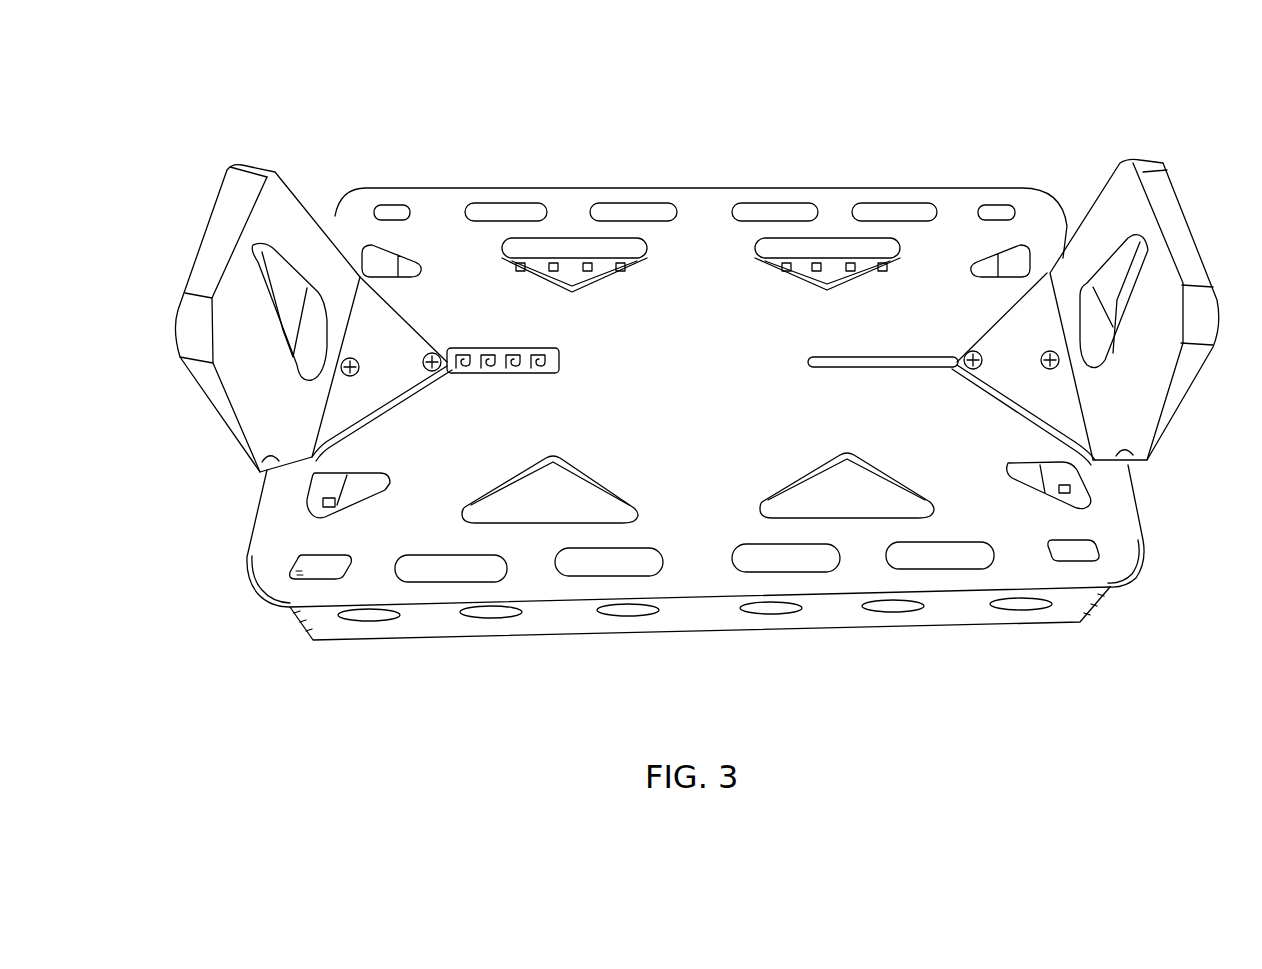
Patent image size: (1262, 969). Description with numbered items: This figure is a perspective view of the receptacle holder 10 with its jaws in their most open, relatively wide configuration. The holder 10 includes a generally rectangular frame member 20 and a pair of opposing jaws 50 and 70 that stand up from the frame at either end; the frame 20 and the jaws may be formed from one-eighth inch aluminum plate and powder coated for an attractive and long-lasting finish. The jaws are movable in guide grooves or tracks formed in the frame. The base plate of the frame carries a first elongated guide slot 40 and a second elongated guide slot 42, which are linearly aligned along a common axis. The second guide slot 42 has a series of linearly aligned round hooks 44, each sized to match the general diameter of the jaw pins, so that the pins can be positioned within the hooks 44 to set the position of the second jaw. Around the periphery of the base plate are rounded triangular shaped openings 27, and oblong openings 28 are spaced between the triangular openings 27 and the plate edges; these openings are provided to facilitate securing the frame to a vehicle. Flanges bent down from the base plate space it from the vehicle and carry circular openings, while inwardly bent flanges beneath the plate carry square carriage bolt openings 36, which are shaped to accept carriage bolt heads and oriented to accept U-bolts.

The holder 10 is at (1158, 89).
The frame member 20 is at (460, 188).
The rounded triangular shaped openings 27 is at (763, 237).
The oblong openings 28 is at (742, 576).
The carriage bolt openings 36 is at (788, 253).
The first elongated guide slot 40 is at (870, 357).
The second elongated guide slot 42 is at (530, 347).
The round hooks 44 is at (490, 375).
The jaw 50 is at (1168, 398).
The jaw 70 is at (302, 222).